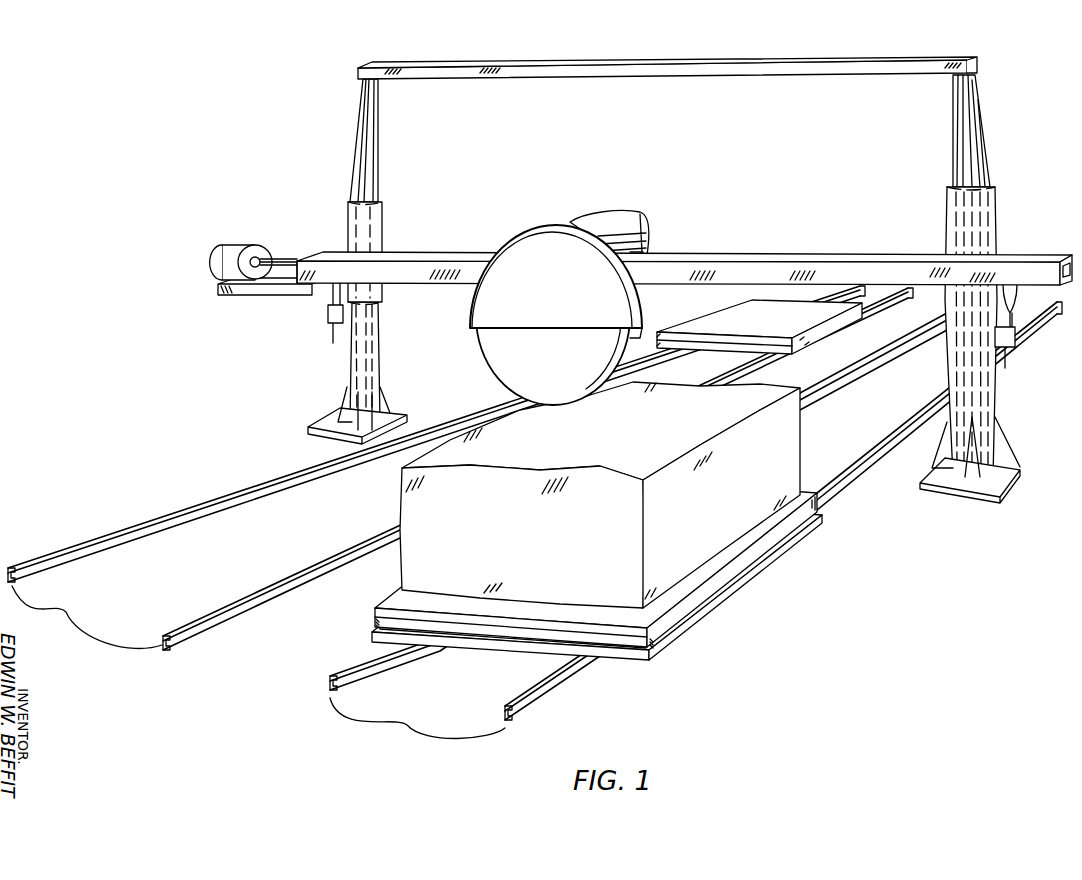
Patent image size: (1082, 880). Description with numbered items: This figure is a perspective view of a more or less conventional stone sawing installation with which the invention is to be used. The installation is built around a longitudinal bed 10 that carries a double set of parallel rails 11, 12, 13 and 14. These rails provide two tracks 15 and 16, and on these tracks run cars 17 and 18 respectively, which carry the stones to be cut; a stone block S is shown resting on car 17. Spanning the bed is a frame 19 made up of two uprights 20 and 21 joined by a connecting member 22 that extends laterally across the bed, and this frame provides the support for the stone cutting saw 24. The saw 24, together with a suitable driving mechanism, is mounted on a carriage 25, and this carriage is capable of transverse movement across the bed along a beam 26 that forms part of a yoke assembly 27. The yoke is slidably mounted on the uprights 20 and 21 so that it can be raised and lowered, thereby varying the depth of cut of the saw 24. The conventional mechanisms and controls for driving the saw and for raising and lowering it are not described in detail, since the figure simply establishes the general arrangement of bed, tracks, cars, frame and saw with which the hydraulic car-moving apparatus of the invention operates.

The longitudinal bed 10 is at (535, 519).
The rail 11 is at (588, 665).
The rail 12 is at (400, 651).
The rail 13 is at (238, 616).
The rail 14 is at (138, 537).
The track 15 is at (417, 725).
The track 16 is at (87, 617).
The car 17 is at (723, 572).
The car 18 is at (716, 318).
The frame 19 is at (982, 289).
The upright 20 is at (980, 392).
The upright 21 is at (352, 360).
The connecting member 22 is at (796, 68).
The stone cutting saw 24 is at (510, 368).
The carriage 25 is at (633, 220).
The beam 26 is at (684, 249).
The yoke assembly 27 is at (1030, 272).
The stone block S is at (790, 437).